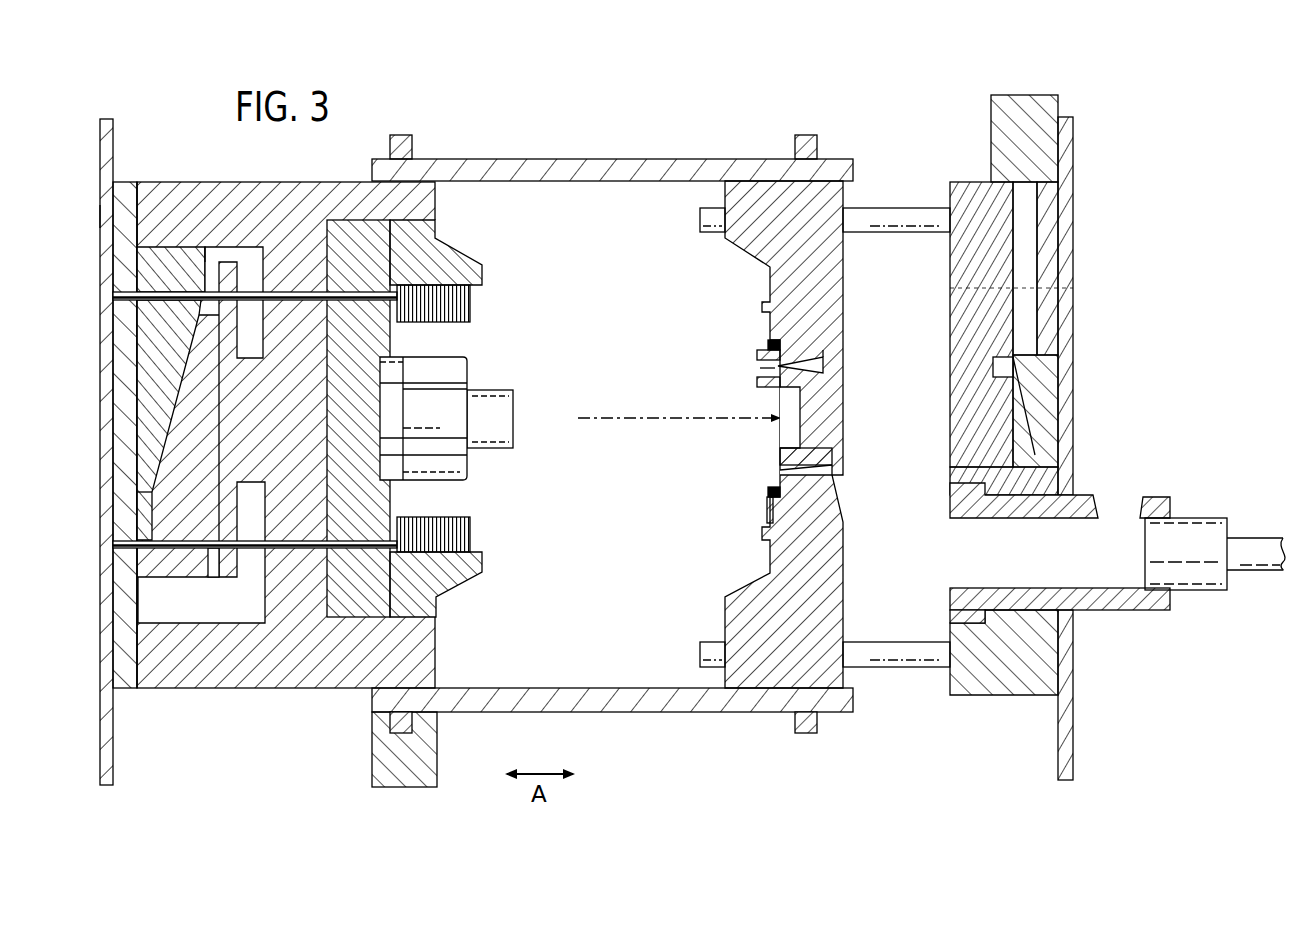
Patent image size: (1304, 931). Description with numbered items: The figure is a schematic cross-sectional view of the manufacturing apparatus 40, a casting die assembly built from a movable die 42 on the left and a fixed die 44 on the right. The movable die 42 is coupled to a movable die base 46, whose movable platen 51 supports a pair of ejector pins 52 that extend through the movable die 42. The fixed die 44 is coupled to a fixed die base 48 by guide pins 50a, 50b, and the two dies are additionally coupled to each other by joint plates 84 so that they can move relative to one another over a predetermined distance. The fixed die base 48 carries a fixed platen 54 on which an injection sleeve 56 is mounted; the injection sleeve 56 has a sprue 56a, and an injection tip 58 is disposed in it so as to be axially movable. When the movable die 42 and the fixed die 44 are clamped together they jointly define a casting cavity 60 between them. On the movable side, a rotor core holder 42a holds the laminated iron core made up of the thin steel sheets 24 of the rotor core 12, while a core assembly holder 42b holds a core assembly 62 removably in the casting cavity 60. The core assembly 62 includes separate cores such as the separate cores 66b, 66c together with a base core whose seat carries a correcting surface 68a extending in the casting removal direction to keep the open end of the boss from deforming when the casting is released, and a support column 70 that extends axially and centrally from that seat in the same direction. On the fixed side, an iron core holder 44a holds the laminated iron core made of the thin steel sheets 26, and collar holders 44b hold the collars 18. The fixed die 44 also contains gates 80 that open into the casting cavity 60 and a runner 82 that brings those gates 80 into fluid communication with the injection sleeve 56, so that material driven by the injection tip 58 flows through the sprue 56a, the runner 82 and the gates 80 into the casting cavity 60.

The rotor core 12 is at (481, 418).
The collars 18 is at (767, 346).
The thin steel sheets 24 is at (472, 300).
The thin steel sheets 26 is at (768, 490).
The manufacturing apparatus 40 is at (683, 111).
The movable die 42 is at (274, 456).
The rotor core holder 42a is at (446, 276).
The core assembly holder 42b is at (402, 372).
The fixed die 44 is at (800, 472).
The iron core holder 44a is at (764, 520).
The collar holders 44b is at (762, 371).
The movable die base 46 is at (92, 344).
The fixed die base 48 is at (1008, 704).
The guide pin 50a is at (903, 222).
The guide pin 50b is at (906, 663).
The movable platen 51 is at (106, 215).
The ejector pins 52 is at (252, 292).
The fixed platen 54 is at (1068, 256).
The injection sleeve 56 is at (1105, 603).
The sprue 56a is at (1118, 514).
The injection tip 58 is at (1156, 547).
The casting cavity 60 is at (433, 500).
The core assembly 62 is at (492, 391).
The separate core 66b is at (458, 408).
The separate core 66c is at (448, 467).
The correcting surface 68a is at (398, 419).
The support column 70 is at (513, 425).
The gates 80 is at (823, 365).
The runner 82 is at (843, 478).
The joint plates 84 is at (589, 716).